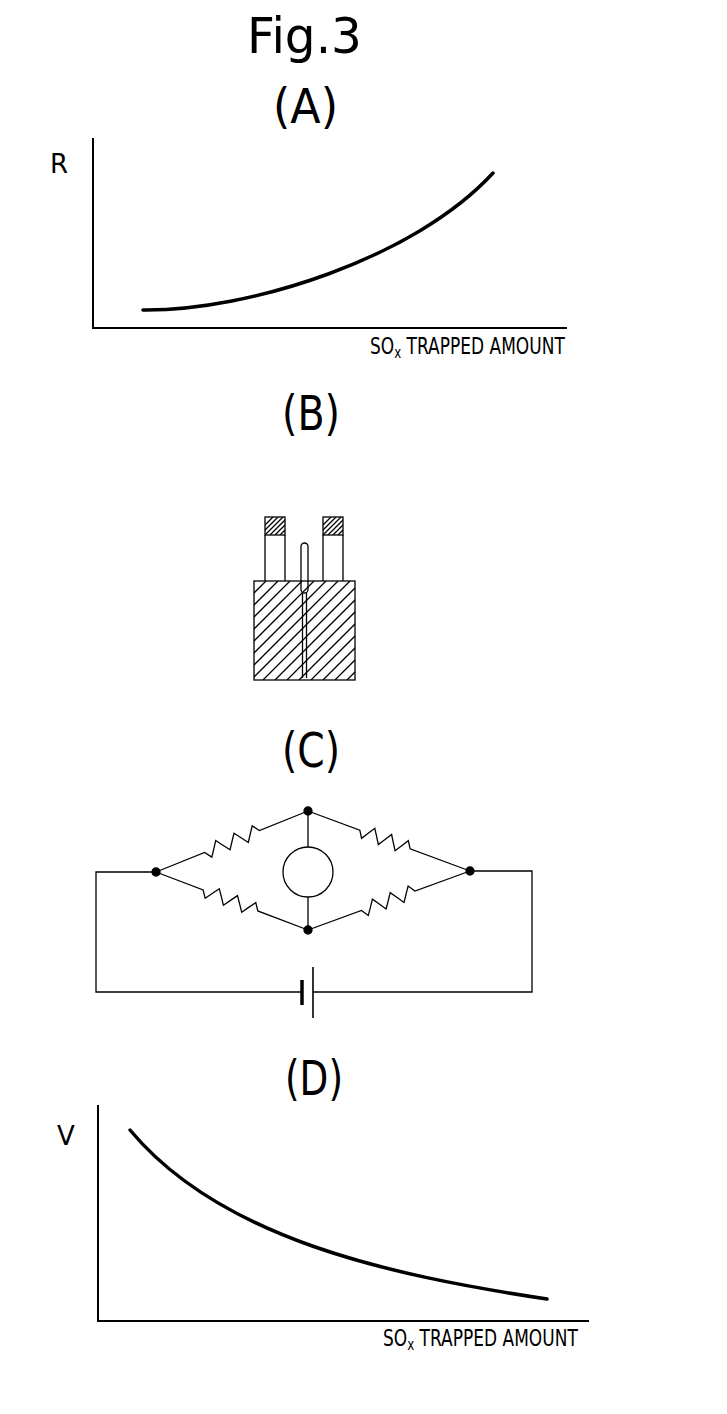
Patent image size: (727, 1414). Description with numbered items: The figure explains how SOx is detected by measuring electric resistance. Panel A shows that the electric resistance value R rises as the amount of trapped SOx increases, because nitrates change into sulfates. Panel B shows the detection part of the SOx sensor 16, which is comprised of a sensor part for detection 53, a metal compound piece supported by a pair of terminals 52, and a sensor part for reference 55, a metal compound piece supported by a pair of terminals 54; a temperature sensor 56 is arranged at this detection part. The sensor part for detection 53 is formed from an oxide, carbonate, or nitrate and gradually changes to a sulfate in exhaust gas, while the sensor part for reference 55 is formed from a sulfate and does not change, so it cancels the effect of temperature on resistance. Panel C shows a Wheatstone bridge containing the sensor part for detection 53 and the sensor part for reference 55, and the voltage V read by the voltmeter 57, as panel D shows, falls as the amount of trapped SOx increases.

The SOx sensor 16 is at (236, 668).
The pair of terminals 52 is at (287, 552).
The sensor part for detection 53 is at (268, 518).
The pair of terminals 54 is at (323, 552).
The sensor part for reference 55 is at (325, 518).
The temperature sensor 56 is at (303, 543).
The voltmeter 57 is at (293, 850).